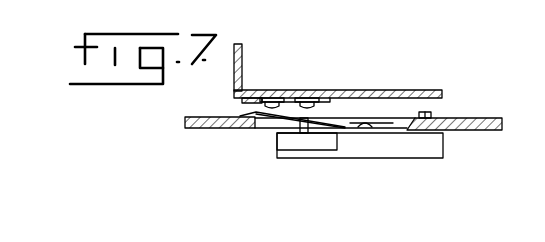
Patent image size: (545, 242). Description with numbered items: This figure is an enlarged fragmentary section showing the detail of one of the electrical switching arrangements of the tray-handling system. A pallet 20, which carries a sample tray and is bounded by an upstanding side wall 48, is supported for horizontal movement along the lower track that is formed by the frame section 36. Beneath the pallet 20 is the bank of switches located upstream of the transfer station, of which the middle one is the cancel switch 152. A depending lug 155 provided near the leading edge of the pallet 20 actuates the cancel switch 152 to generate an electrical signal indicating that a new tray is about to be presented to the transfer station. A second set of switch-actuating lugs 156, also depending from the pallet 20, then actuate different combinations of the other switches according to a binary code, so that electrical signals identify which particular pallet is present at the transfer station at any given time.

The left side wall 48 is at (243, 45).
The pallet 20 is at (436, 85).
The switch-actuating lugs 156 is at (324, 95).
The depending lug 155 is at (258, 109).
The frame section 36 is at (478, 132).
The cancel switch 152 is at (282, 119).